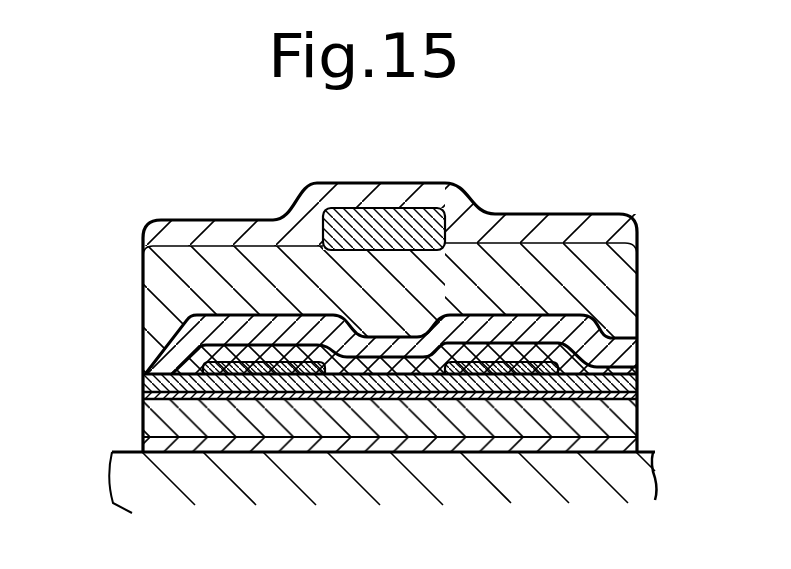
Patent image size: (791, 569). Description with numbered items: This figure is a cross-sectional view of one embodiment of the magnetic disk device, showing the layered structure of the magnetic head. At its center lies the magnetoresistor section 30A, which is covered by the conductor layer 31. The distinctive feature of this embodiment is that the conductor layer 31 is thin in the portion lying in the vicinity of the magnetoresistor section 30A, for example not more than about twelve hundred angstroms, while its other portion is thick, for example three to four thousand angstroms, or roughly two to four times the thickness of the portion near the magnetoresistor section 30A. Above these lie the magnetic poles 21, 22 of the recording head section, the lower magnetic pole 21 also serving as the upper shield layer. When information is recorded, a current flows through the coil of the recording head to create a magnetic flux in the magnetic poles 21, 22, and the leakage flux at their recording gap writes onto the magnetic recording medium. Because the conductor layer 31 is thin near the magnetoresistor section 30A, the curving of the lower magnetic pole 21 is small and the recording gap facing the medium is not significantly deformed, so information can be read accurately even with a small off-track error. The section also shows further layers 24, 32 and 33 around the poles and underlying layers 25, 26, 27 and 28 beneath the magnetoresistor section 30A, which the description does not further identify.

The lower magnetic pole (upper shield layer) 21 is at (192, 329).
The magnetic pole 22 is at (436, 214).
The protective layer 24 is at (607, 272).
The substrate 25 is at (653, 475).
The undercoat layer 26 is at (625, 445).
The insulating layer 27 is at (622, 415).
The lower electrode layer 28 is at (608, 388).
The magnetoresistor section 30A is at (214, 392).
The conductor layer 31 is at (612, 337).
The upper layer 32 is at (525, 313).
The cover layer 33 is at (505, 228).